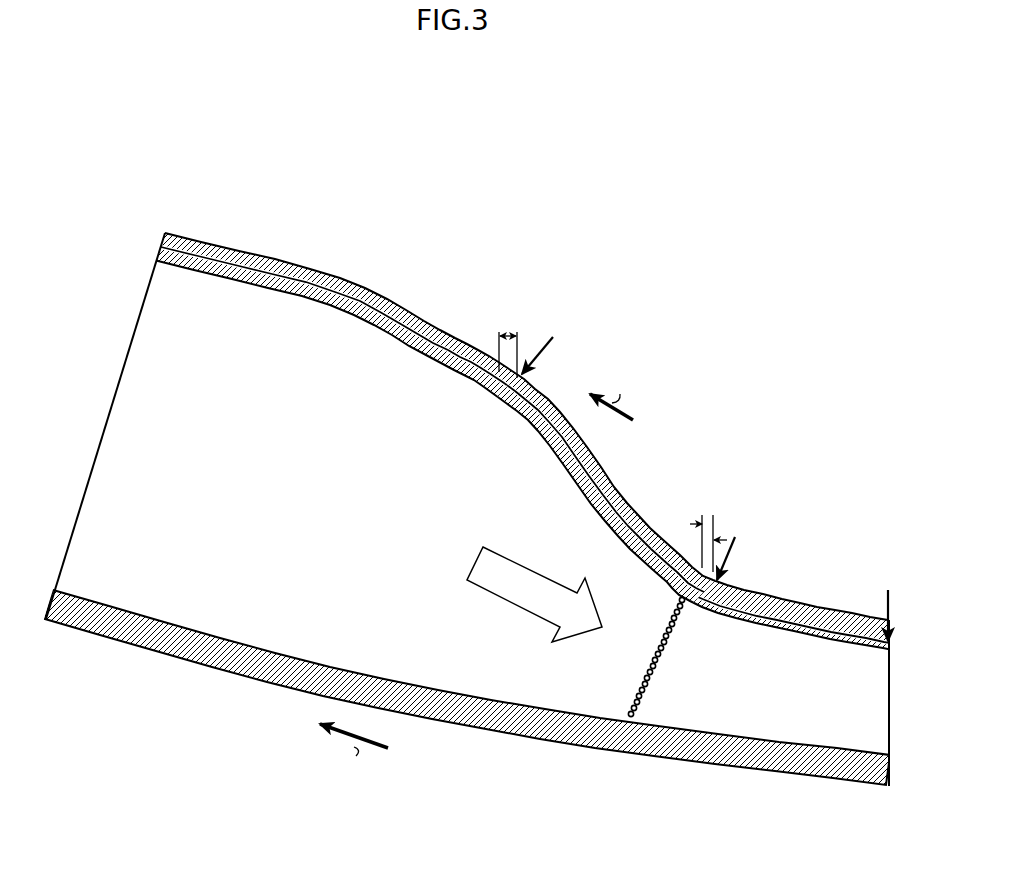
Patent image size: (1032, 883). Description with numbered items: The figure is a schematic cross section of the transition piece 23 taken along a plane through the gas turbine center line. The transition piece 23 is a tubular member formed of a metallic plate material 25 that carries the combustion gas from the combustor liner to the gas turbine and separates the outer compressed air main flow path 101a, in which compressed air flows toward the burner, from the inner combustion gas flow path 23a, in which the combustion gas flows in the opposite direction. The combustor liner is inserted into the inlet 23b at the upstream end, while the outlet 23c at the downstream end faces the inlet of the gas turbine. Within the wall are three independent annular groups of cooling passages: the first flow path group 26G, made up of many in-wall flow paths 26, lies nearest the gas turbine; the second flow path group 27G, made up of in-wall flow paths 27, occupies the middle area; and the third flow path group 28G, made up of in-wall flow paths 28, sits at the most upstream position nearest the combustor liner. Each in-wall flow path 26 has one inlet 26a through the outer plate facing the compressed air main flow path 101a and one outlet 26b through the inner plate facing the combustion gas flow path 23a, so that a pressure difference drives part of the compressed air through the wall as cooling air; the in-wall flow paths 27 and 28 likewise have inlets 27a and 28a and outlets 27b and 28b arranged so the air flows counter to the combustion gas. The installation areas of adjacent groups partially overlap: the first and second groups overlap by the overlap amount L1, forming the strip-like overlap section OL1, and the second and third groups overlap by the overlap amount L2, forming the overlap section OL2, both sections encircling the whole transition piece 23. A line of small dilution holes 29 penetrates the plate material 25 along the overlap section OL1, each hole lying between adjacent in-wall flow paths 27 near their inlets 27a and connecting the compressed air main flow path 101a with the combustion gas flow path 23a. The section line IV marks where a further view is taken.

The transition piece 23 is at (480, 505).
The combustion gas flow path 23a is at (346, 467).
The inlet 23b is at (104, 422).
The outlet 23c is at (890, 701).
The plate material 25 is at (52, 588).
The in-wall flow path 26 is at (514, 438).
The inlet 26a is at (886, 618).
The outlet 26b is at (697, 600).
The first flow path group 26G is at (789, 614).
The in-wall flow path 27 is at (514, 438).
The inlet 27a is at (718, 580).
The outlet 27b is at (490, 380).
The second flow path group 27G is at (594, 477).
The in-wall flow path 28 is at (514, 438).
The inlet 28a is at (529, 378).
The outlet 28b is at (179, 253).
The third flow path group 28G is at (332, 324).
The dilution hole 29 is at (636, 690).
The compressed air main flow path 101a is at (484, 776).
The overlap amount L1 is at (708, 540).
The overlap amount L2 is at (509, 344).
The overlap section OL1 is at (726, 513).
The overlap section OL2 is at (532, 337).
The section line IV is at (654, 521).